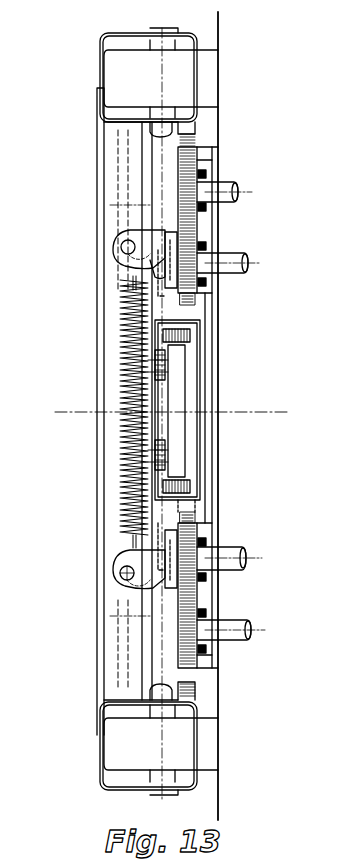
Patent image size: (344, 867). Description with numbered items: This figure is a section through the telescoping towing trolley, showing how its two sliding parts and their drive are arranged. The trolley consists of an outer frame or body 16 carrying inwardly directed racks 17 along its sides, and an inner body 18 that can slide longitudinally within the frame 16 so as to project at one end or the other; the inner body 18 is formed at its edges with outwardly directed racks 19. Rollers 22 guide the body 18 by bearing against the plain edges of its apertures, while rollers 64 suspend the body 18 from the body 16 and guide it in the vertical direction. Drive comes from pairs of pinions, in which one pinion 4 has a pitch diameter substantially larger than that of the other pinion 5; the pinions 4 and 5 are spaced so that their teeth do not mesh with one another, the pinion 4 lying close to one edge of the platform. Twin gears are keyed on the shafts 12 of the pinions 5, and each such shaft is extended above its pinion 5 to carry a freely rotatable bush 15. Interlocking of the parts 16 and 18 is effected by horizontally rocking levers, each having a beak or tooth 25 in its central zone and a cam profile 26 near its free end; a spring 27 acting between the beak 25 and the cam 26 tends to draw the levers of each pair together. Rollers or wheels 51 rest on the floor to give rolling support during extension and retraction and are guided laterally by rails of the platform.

The pinion 4 is at (188, 162).
The pinion 5 is at (190, 230).
The shaft 12 is at (228, 187).
The freely rotatable bush 15 is at (150, 281).
The outer frame or body 16 is at (108, 648).
The inwardly directed racks 17 is at (190, 128).
The inner body 18 is at (205, 366).
The outwardly directed racks 19 is at (190, 503).
The rollers 22 is at (165, 446).
The beak or tooth 25 is at (192, 298).
The cam profile 26 is at (178, 240).
The spring 27 is at (122, 492).
The rollers or wheels 51 is at (210, 80).
The rollers 64 is at (184, 338).